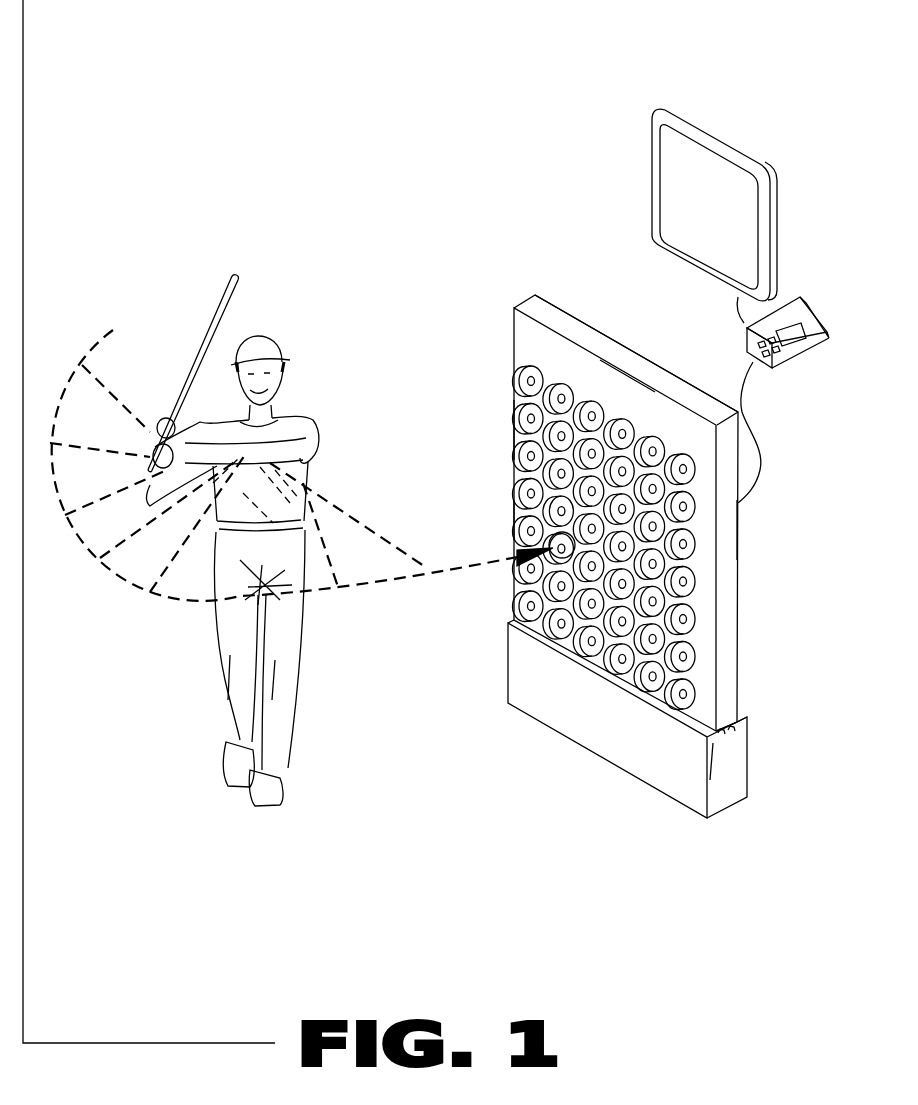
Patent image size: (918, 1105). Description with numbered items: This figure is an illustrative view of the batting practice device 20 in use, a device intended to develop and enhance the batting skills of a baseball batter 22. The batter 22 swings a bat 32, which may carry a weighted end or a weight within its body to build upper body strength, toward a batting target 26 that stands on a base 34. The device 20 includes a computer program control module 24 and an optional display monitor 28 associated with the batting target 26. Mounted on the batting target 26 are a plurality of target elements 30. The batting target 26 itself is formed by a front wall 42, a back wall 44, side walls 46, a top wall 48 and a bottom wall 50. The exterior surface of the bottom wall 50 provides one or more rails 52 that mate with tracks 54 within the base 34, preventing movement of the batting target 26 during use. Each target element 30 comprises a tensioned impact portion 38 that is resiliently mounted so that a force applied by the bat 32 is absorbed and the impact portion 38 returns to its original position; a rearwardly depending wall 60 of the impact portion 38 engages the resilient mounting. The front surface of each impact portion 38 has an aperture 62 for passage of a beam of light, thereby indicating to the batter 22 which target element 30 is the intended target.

The batting practice device 20 is at (595, 272).
The batter 22 is at (270, 345).
The control module 24 is at (798, 350).
The batting target 26 is at (506, 335).
The display monitor 28 is at (728, 140).
The target element 30 is at (585, 535).
The bat 32 is at (220, 312).
The base 34 is at (625, 745).
The tensioned impact portion 38 is at (527, 380).
The front wall 42 is at (513, 520).
The back wall 44 is at (655, 362).
The side wall 46 is at (514, 430).
The top wall 48 is at (600, 340).
The bottom wall 50 is at (563, 647).
The rail 52 is at (740, 732).
The track 54 is at (722, 738).
The rearwardly depending wall 60 is at (561, 386).
The aperture 62 is at (527, 487).